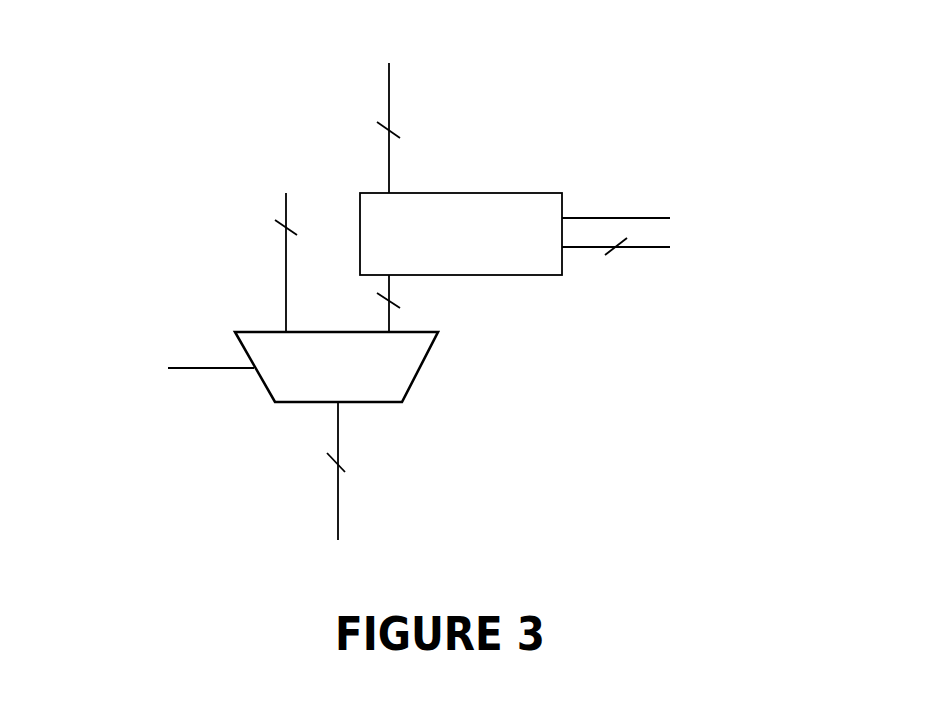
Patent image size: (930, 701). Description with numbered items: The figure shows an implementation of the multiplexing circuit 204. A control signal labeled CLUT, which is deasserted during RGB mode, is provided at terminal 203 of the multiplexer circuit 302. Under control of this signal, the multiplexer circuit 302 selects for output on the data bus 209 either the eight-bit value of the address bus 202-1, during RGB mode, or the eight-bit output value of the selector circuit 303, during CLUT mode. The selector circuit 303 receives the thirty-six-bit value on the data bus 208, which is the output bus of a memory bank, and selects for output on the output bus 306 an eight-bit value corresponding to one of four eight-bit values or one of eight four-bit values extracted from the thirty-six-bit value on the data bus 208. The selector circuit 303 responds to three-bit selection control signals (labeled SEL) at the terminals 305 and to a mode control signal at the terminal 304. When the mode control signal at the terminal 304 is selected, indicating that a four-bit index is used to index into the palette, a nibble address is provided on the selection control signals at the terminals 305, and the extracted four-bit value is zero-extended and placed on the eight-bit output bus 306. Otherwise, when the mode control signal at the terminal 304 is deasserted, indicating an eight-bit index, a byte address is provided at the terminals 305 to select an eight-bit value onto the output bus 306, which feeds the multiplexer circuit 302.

The multiplexing circuit 204 is at (570, 68).
The data bus 208 is at (389, 82).
The selector circuit 303 is at (507, 245).
The terminal 304 is at (620, 218).
The terminals 305 is at (667, 247).
The address bus 202-1 is at (286, 258).
The output bus 306 is at (388, 315).
The multiplexer circuit 302 is at (425, 362).
The terminal 203 is at (222, 368).
The data bus 209 is at (338, 513).